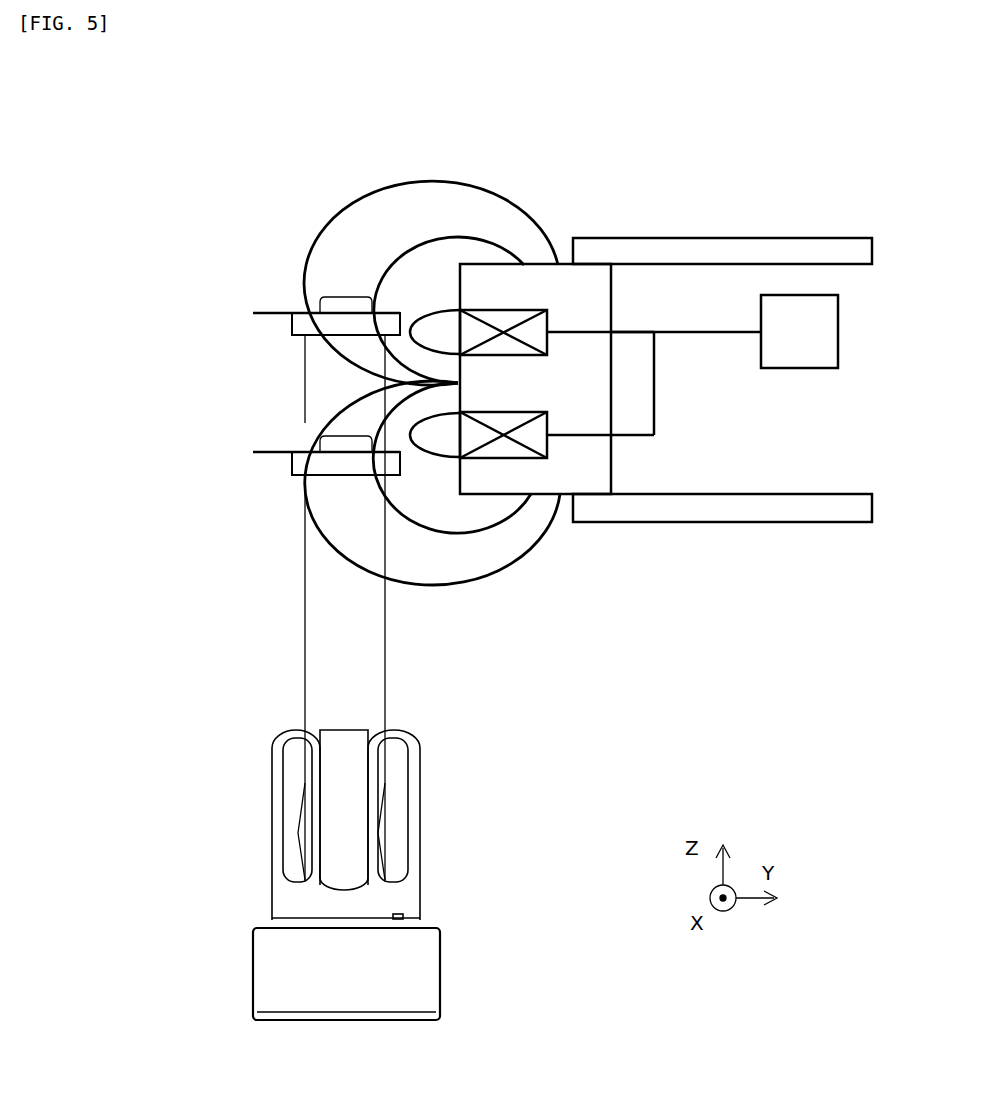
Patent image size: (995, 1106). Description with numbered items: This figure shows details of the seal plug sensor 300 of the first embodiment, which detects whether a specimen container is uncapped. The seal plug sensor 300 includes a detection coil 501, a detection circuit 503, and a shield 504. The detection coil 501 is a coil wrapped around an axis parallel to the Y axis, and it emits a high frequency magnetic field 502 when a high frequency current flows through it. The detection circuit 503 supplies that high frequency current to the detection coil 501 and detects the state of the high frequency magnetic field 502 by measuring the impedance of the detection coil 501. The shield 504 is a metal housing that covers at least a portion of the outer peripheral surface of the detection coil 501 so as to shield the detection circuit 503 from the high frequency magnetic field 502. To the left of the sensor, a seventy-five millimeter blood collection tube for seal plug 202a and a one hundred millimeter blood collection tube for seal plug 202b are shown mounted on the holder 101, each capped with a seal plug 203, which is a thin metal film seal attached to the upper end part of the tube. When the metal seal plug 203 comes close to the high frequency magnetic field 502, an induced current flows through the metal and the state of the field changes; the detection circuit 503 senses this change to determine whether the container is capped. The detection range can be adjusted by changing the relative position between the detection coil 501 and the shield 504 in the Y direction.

The holder 101 is at (398, 963).
The 75-mm blood collection tube for seal plug 202a is at (367, 677).
The 100-mm blood collection tube for seal plug 202b is at (313, 366).
The seal plug 203 is at (298, 312).
The seal plug sensor 300 is at (873, 120).
The detection coil 501 is at (530, 307).
The high frequency magnetic field 502 is at (457, 587).
The detection circuit 503 is at (793, 295).
The shield 504 is at (714, 238).